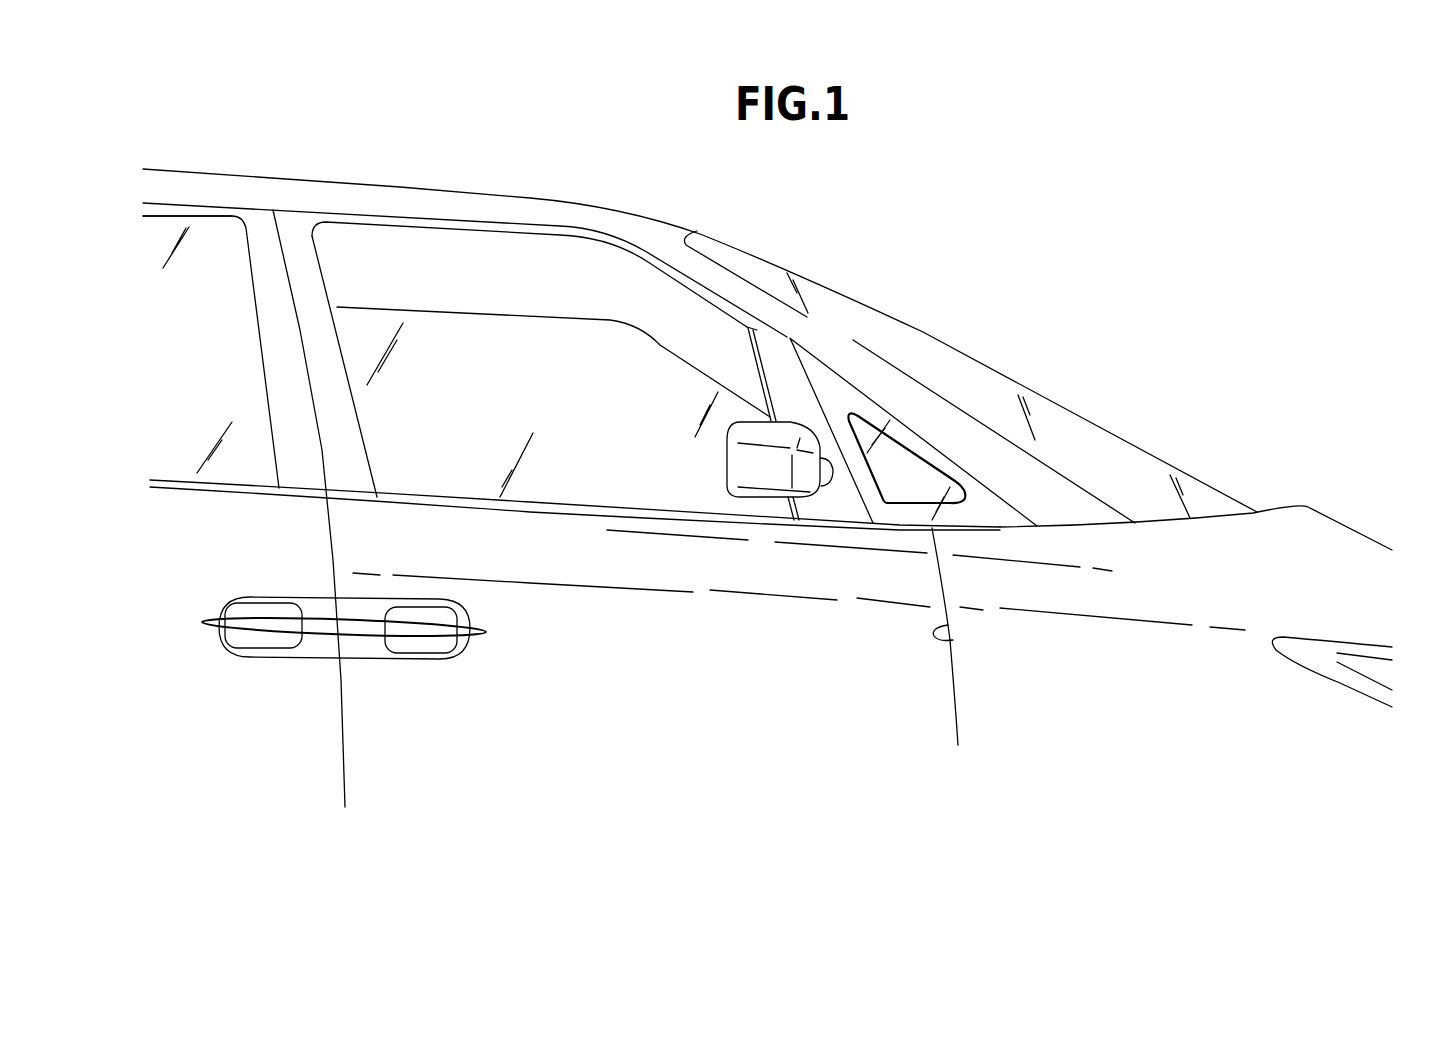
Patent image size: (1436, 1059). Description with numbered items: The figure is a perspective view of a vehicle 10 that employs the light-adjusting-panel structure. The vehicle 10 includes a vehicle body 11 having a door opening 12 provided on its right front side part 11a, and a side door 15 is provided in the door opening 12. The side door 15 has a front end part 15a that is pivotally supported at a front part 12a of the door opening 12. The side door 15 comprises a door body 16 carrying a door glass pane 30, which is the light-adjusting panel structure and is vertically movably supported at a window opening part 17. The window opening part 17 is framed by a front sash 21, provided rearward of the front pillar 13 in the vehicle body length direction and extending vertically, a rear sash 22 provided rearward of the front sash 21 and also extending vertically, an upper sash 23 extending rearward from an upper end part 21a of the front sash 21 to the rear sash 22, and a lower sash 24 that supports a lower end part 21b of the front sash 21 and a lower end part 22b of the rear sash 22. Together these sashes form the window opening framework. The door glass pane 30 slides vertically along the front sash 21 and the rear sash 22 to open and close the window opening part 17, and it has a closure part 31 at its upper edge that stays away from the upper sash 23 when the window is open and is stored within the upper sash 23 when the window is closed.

The vehicle 10 is at (917, 210).
The vehicle body 11 is at (493, 194).
The right front side part 11a is at (1025, 742).
The door opening 12 is at (713, 285).
The front part of the door opening 12a is at (953, 639).
The front pillar 13 is at (945, 420).
The side door 15 is at (348, 747).
The front end part of the side door 15a is at (938, 677).
The door body 16 is at (580, 643).
The window opening part 17 is at (355, 372).
The front sash 21 is at (790, 400).
The upper end part of the front sash 21a is at (772, 348).
The lower end part of the front sash 21b is at (843, 510).
The rear sash 22 is at (330, 415).
The lower end part of the rear sash 22b is at (293, 223).
The upper sash 23 is at (570, 223).
The lower sash 24 is at (578, 513).
The door glass pane 30 is at (450, 307).
The closure part 31 is at (550, 317).